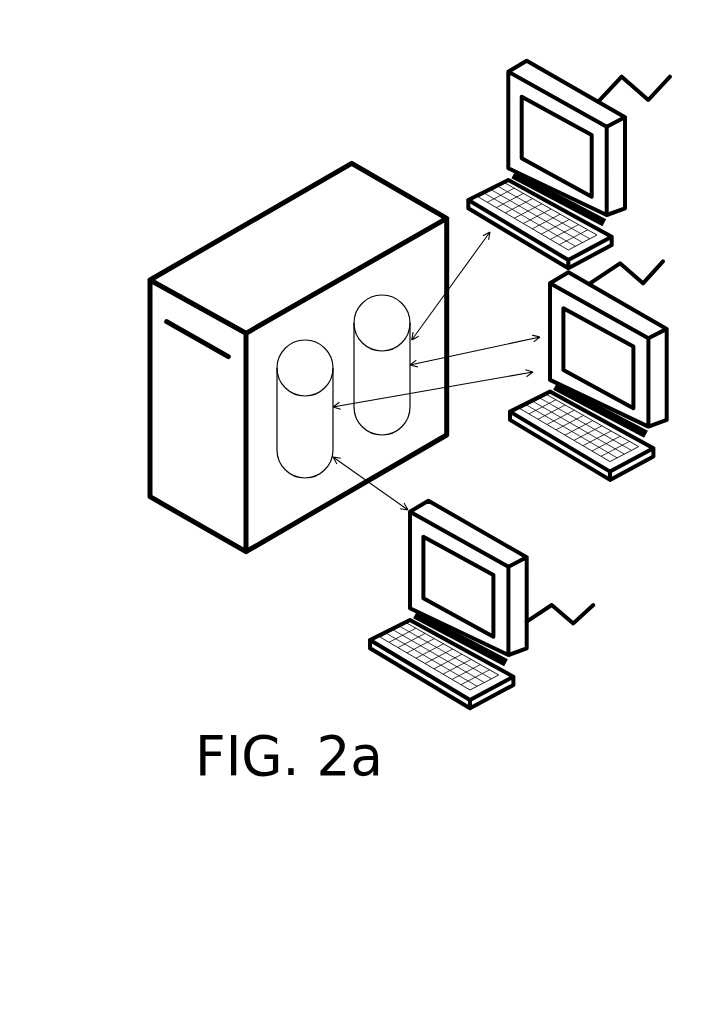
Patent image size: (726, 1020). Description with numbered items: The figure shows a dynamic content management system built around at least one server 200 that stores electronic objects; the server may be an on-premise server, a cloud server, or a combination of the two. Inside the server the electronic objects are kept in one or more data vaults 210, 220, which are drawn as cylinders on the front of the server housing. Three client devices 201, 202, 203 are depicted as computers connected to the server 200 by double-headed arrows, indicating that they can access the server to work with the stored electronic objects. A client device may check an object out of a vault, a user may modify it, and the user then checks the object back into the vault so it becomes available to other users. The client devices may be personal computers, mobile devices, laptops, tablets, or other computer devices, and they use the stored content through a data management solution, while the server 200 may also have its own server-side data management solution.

The server 200 is at (298, 357).
The data vault 210 is at (305, 409).
The data vault 220 is at (382, 365).
The client device 201 is at (587, 155).
The client device 202 is at (603, 357).
The client device 203 is at (501, 605).